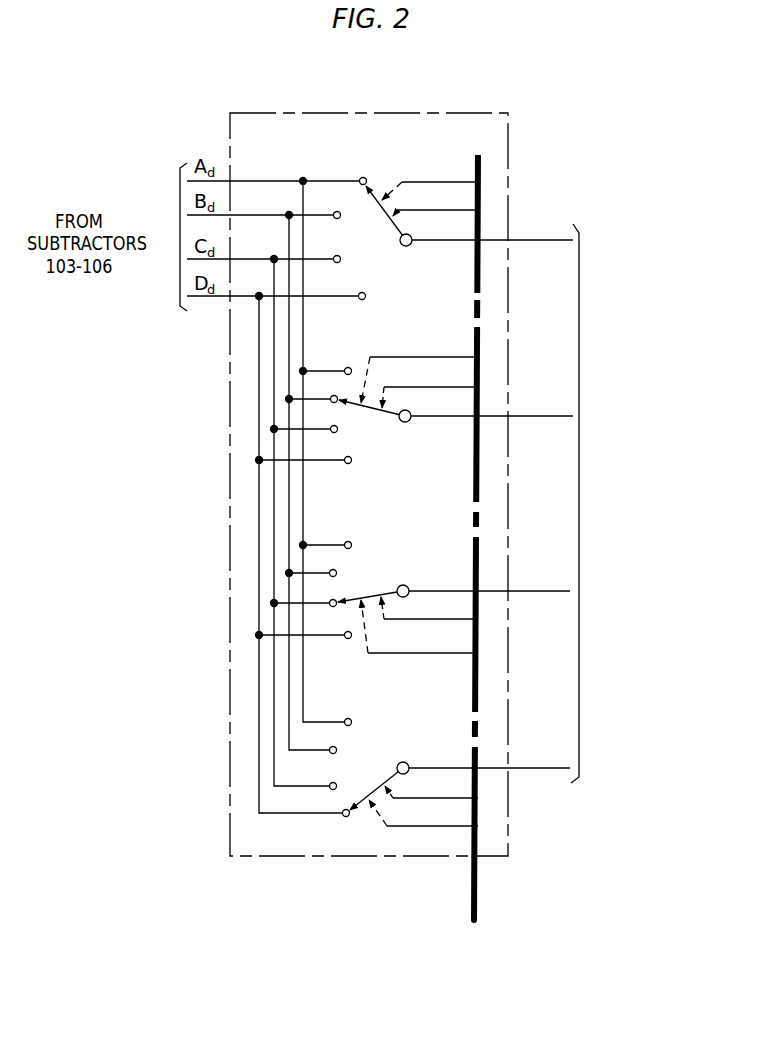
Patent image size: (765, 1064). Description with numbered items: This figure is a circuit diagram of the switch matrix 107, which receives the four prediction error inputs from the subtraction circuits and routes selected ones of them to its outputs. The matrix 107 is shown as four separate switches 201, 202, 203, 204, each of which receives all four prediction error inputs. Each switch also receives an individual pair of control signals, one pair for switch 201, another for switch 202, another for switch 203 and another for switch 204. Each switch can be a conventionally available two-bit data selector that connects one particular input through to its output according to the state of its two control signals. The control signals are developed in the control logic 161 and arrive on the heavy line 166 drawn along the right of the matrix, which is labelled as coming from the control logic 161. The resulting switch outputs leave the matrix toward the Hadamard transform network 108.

The switch matrix 107 is at (490, 113).
The switch 201 is at (429, 284).
The switch 202 is at (429, 476).
The switch 203 is at (429, 556).
The switch 204 is at (424, 729).
The control line from control logic 166 is at (478, 888).
The Hadamard transform network 108 is at (635, 503).
The control logic circuit 161 is at (473, 974).